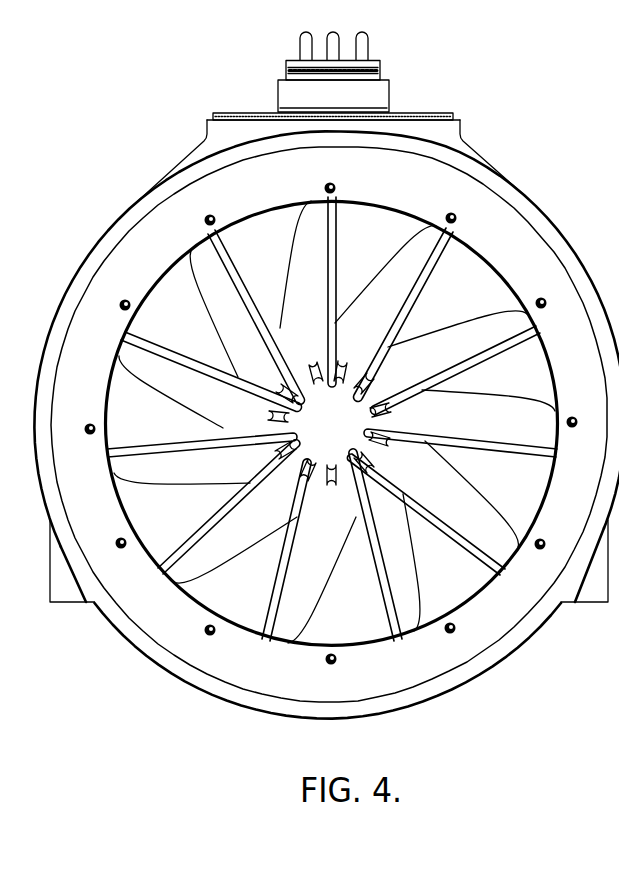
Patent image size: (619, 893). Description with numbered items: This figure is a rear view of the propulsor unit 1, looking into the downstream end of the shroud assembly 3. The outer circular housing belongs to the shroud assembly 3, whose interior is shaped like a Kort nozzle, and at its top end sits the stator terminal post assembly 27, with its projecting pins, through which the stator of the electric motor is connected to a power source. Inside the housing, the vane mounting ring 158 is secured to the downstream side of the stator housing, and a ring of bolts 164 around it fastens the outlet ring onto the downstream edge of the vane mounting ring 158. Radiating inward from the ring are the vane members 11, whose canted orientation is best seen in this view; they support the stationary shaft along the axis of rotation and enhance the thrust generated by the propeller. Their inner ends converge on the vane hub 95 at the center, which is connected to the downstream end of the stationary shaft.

The propulsor unit 1 is at (160, 165).
The shroud assembly 3 is at (100, 237).
The stator terminal post assembly 27 is at (373, 92).
The vane mounting ring 158 is at (490, 258).
The bolts 164 is at (541, 313).
The vane hub 95 is at (288, 448).
The vane members 11 is at (477, 527).